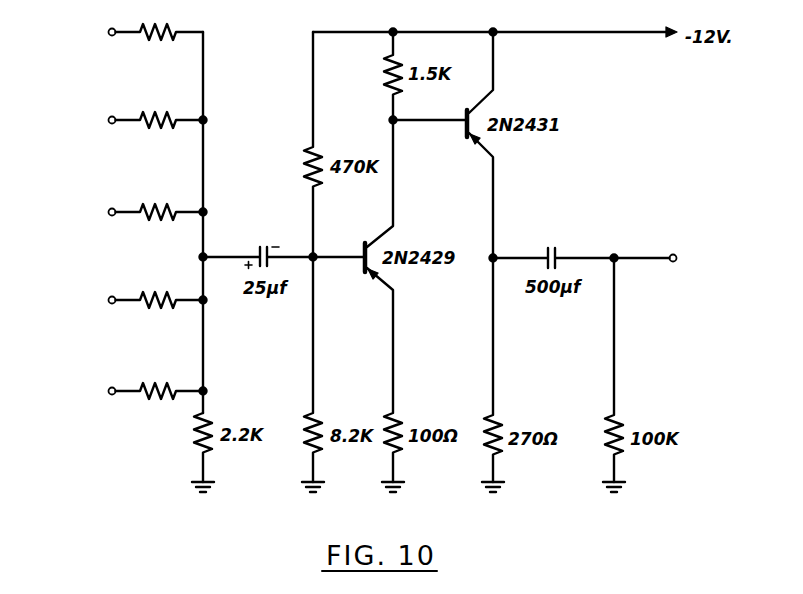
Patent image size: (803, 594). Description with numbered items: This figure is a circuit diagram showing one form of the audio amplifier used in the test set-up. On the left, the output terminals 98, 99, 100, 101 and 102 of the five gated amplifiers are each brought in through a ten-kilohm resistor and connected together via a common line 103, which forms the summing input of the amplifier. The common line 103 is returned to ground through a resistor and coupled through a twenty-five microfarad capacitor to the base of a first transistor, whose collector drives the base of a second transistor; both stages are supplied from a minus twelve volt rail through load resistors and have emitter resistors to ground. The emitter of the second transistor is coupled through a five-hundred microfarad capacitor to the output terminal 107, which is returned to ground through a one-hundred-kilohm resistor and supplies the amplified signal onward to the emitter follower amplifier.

The output terminal 98 is at (107, 32).
The output terminal 99 is at (107, 120).
The output terminal 100 is at (109, 212).
The output terminal 101 is at (109, 300).
The output terminal 102 is at (109, 391).
The common line 103 is at (205, 166).
The output terminal 107 is at (674, 254).